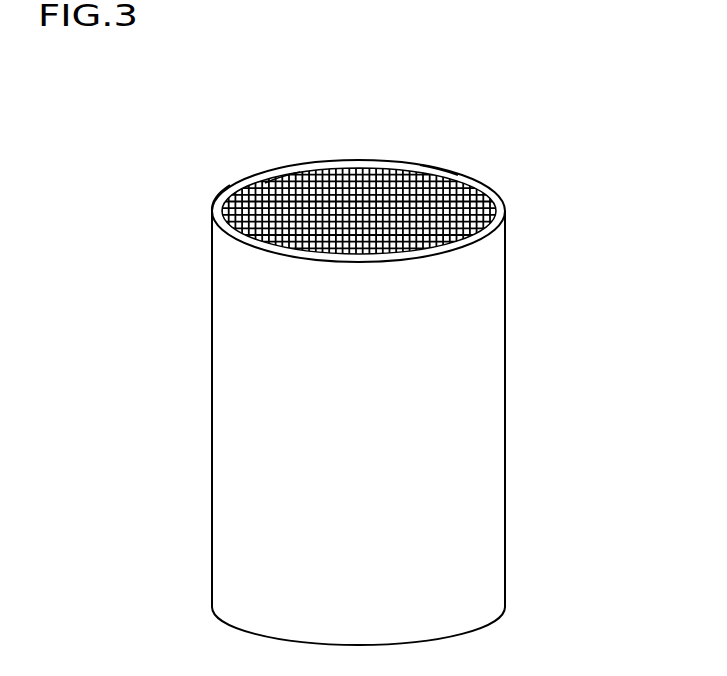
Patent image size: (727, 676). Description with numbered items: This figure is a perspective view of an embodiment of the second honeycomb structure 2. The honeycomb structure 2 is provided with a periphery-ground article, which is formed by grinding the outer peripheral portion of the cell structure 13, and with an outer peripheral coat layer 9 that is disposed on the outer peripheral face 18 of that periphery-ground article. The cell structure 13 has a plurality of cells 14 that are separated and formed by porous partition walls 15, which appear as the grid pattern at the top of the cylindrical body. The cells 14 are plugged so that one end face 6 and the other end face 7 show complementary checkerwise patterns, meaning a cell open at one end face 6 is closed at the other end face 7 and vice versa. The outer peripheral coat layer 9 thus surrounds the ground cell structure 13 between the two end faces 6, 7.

The second honeycomb structure 2 is at (648, 500).
The one end face 6 is at (505, 204).
The the other end face 7 is at (505, 607).
The outer peripheral coat layer 9 is at (467, 243).
The cell structure 13 is at (265, 183).
The cell 14 is at (458, 175).
The partition wall 15 is at (340, 190).
The outer peripheral face 18 is at (213, 210).